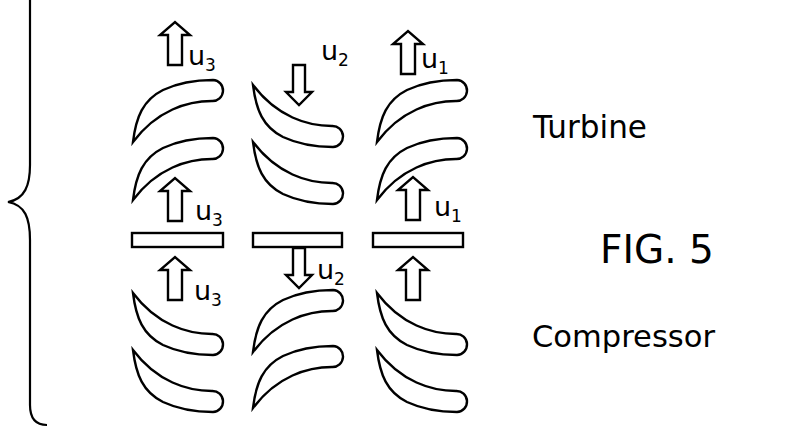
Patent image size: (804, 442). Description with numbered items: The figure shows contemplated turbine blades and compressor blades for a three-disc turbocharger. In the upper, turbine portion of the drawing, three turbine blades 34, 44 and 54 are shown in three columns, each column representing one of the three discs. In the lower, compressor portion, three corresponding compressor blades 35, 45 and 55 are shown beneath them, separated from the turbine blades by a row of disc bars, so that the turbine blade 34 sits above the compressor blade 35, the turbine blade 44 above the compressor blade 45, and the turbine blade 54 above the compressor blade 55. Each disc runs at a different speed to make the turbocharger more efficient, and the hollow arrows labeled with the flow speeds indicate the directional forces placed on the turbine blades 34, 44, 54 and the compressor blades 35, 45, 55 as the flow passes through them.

The turbine blade 34 is at (135, 126).
The turbine blade 44 is at (308, 128).
The turbine blade 54 is at (452, 85).
The compressor blade 35 is at (155, 398).
The compressor blade 45 is at (275, 375).
The compressor blade 55 is at (390, 390).